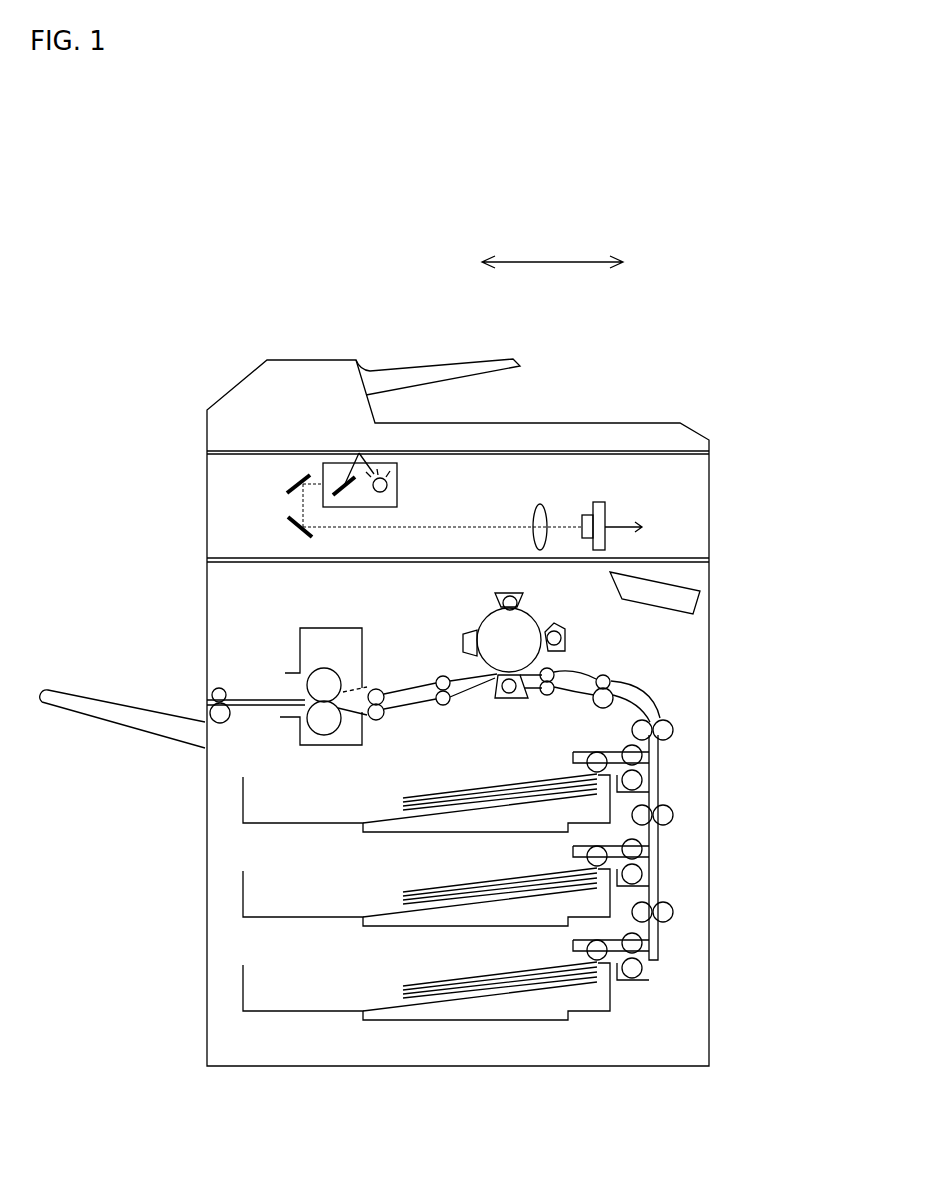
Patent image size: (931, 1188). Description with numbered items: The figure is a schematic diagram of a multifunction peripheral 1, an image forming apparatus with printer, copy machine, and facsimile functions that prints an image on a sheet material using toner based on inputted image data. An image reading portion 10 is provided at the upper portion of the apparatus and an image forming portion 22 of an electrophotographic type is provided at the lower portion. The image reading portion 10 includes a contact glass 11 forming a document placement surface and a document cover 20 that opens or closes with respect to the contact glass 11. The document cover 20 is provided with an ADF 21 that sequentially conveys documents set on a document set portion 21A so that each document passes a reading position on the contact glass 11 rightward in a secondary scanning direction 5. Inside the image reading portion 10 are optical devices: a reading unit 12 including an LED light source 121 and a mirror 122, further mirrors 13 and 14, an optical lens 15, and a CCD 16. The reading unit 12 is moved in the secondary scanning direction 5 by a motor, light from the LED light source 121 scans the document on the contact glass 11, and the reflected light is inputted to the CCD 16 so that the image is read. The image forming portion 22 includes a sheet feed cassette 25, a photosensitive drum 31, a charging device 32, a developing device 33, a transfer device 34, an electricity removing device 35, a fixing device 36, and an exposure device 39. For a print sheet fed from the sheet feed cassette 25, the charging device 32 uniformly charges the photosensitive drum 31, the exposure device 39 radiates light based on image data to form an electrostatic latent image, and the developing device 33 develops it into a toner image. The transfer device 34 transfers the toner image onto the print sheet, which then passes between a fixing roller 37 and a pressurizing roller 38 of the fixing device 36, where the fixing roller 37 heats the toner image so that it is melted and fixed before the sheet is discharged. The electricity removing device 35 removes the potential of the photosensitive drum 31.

The multifunction peripheral 1 is at (228, 1108).
The secondary scanning direction 5 is at (558, 260).
The image reading portion 10 is at (709, 495).
The contact glass 11 is at (643, 451).
The reading unit 12 is at (397, 478).
The LED light source 121 is at (387, 489).
The mirror 122 is at (345, 478).
The mirror 13 is at (287, 488).
The mirror 14 is at (288, 523).
The optical lens 15 is at (532, 507).
The CCD 16 is at (599, 503).
The document cover 20 is at (688, 428).
The ADF 21 is at (288, 358).
The document set portion 21A is at (432, 366).
The image forming portion 22 is at (709, 632).
The sheet feed cassette 25 is at (382, 833).
The photosensitive drum 31 is at (486, 617).
The charging device 32 is at (518, 595).
The developing device 33 is at (561, 625).
The transfer device 34 is at (503, 702).
The electricity removing device 35 is at (460, 640).
The fixing device 36 is at (371, 755).
The fixing roller 37 is at (317, 672).
The pressurizing roller 38 is at (319, 727).
The exposure device 39 is at (709, 588).